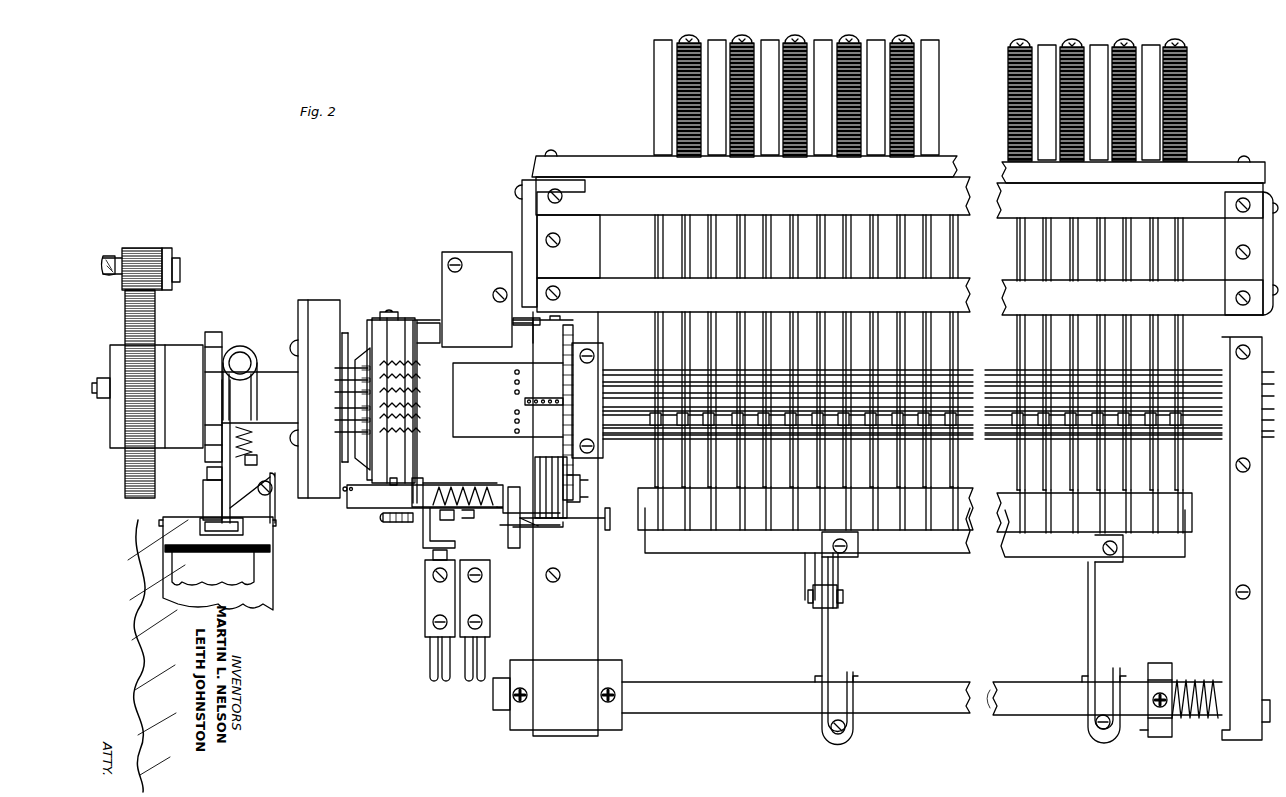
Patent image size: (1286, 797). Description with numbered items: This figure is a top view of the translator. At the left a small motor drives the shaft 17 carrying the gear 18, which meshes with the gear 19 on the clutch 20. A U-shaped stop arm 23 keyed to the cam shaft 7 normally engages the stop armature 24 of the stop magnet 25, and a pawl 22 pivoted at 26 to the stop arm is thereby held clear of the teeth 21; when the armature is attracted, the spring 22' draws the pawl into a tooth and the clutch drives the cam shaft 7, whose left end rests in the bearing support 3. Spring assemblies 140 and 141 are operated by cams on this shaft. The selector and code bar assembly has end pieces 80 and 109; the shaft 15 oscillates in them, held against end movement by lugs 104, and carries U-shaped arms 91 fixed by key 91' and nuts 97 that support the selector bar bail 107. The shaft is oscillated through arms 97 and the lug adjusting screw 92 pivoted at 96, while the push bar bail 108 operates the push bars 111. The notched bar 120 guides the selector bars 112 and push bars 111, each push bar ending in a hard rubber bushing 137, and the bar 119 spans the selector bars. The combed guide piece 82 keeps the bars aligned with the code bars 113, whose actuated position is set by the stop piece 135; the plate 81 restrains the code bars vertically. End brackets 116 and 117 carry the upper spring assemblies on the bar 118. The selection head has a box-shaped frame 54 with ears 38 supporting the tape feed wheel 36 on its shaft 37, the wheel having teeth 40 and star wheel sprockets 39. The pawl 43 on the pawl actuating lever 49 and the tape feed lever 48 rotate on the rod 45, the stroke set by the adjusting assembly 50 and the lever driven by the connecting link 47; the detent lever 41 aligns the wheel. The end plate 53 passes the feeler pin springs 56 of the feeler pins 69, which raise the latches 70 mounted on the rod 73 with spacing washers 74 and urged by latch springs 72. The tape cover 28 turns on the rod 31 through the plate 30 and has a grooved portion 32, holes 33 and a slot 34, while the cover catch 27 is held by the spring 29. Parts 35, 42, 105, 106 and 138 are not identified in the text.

The bearing support 3 is at (318, 300).
The cam shaft 7 is at (264, 374).
The shaft 15 is at (1017, 685).
The shaft 17 is at (117, 254).
The gear 18 is at (157, 249).
The gear 19 is at (125, 328).
The clutch 20 is at (154, 396).
The teeth 21 is at (212, 336).
The pawl 22 is at (214, 433).
The spring 22' is at (259, 446).
The stop arm 23 is at (230, 478).
The stop armature 24 is at (229, 531).
The stop magnet 25 is at (251, 565).
The pivot 26 is at (208, 472).
The cover catch 27 is at (513, 548).
The tape cover 28 is at (470, 453).
The spring 29 is at (472, 492).
The plate 30 is at (472, 256).
The rod 31 is at (426, 340).
The grooved portion 32 is at (455, 366).
The holes 33 is at (514, 390).
The slot 34 is at (543, 398).
The stop plate 35 is at (412, 498).
The tape feed wheel 36 is at (570, 329).
The shaft 37 is at (550, 321).
The ears 38 is at (515, 318).
The star wheel sprockets 39 is at (542, 406).
The teeth 40 is at (536, 462).
The detent lever 41 is at (349, 508).
The link 42 is at (455, 513).
The pawl 43 is at (344, 491).
The rod 45 is at (430, 558).
The connecting link 47 is at (606, 532).
The tape feed lever 48 is at (504, 528).
The pawl actuating lever 49 is at (423, 545).
The adjusting nut and screw assembly 50 is at (402, 522).
The end plate 53 is at (370, 320).
The frame 54 is at (422, 318).
The feeler pin springs 56 is at (335, 432).
The feeler pins 69 is at (514, 421).
The latches 70 is at (375, 365).
The latch springs 72 is at (410, 370).
The rod 73 is at (396, 310).
The spacing washers 74 is at (401, 330).
The end piece 80 is at (596, 248).
The plate 81 is at (592, 348).
The combed guide piece 82 is at (604, 402).
The arms 91 is at (971, 651).
The key 91' is at (970, 667).
The lug adjusting screw 92 is at (814, 608).
The pivot 96 is at (845, 596).
The arms 97 is at (805, 571).
The lugs 104 is at (622, 666).
The collar 105 is at (1158, 663).
The spring 106 is at (1210, 663).
The selector bar bail 107 is at (706, 548).
The push bar bail 108 is at (638, 494).
The end piece 109 is at (1225, 263).
The push bars 111 is at (655, 467).
The selector bars 112 is at (956, 461).
The code bars 113 is at (630, 374).
The end bracket 116 is at (1225, 194).
The end bracket 117 is at (526, 210).
The bar 118 is at (572, 156).
The bar 119 is at (1008, 280).
The notched bar 120 is at (685, 178).
The stop piece 135 is at (1222, 362).
The hard rubber bushing 137 is at (655, 156).
The bars 138 is at (654, 96).
The spring assembly 140 is at (443, 680).
The spring assembly 141 is at (481, 680).